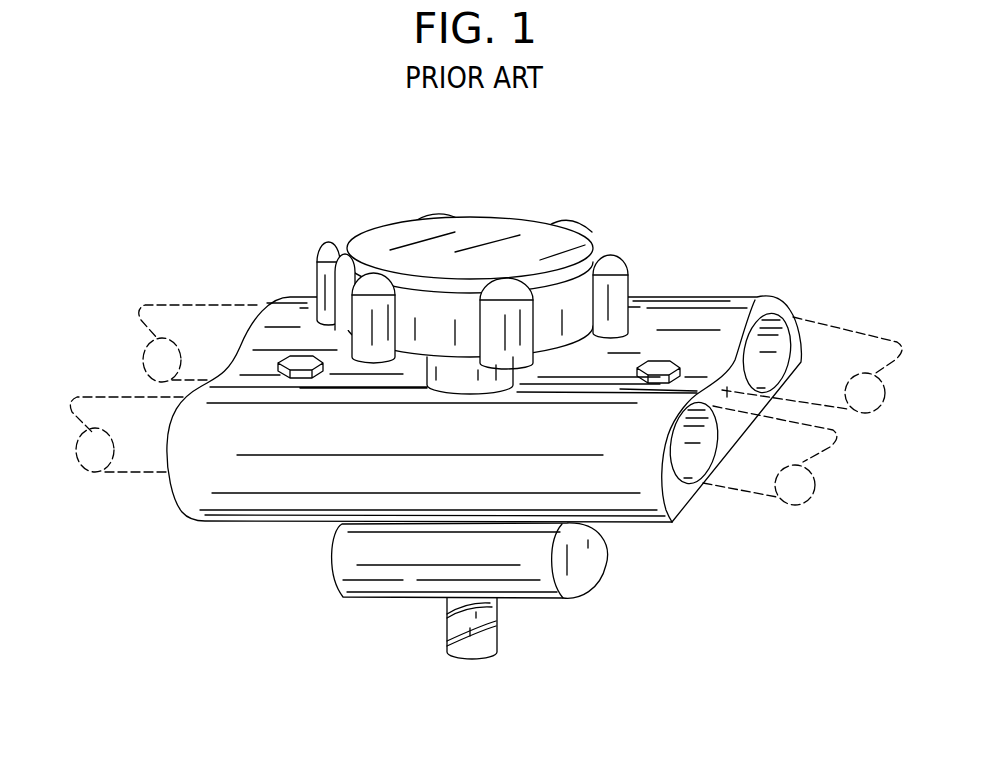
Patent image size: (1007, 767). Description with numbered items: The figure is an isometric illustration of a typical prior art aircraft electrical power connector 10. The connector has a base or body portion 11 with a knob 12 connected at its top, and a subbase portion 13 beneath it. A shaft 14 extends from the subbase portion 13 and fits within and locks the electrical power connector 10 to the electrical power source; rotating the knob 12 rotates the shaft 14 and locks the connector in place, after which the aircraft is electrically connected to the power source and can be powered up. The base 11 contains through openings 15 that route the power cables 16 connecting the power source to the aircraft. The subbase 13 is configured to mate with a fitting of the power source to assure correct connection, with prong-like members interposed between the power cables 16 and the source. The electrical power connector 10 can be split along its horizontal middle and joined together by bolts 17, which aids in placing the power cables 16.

The electrical power connector 10 is at (738, 265).
The base or body portion 11 is at (733, 317).
The knob 12 is at (628, 282).
The subbase portion 13 is at (587, 563).
The shaft 14 is at (500, 632).
The through openings 15 is at (777, 330).
The power cables 16 is at (822, 395).
The bolts 17 is at (664, 360).